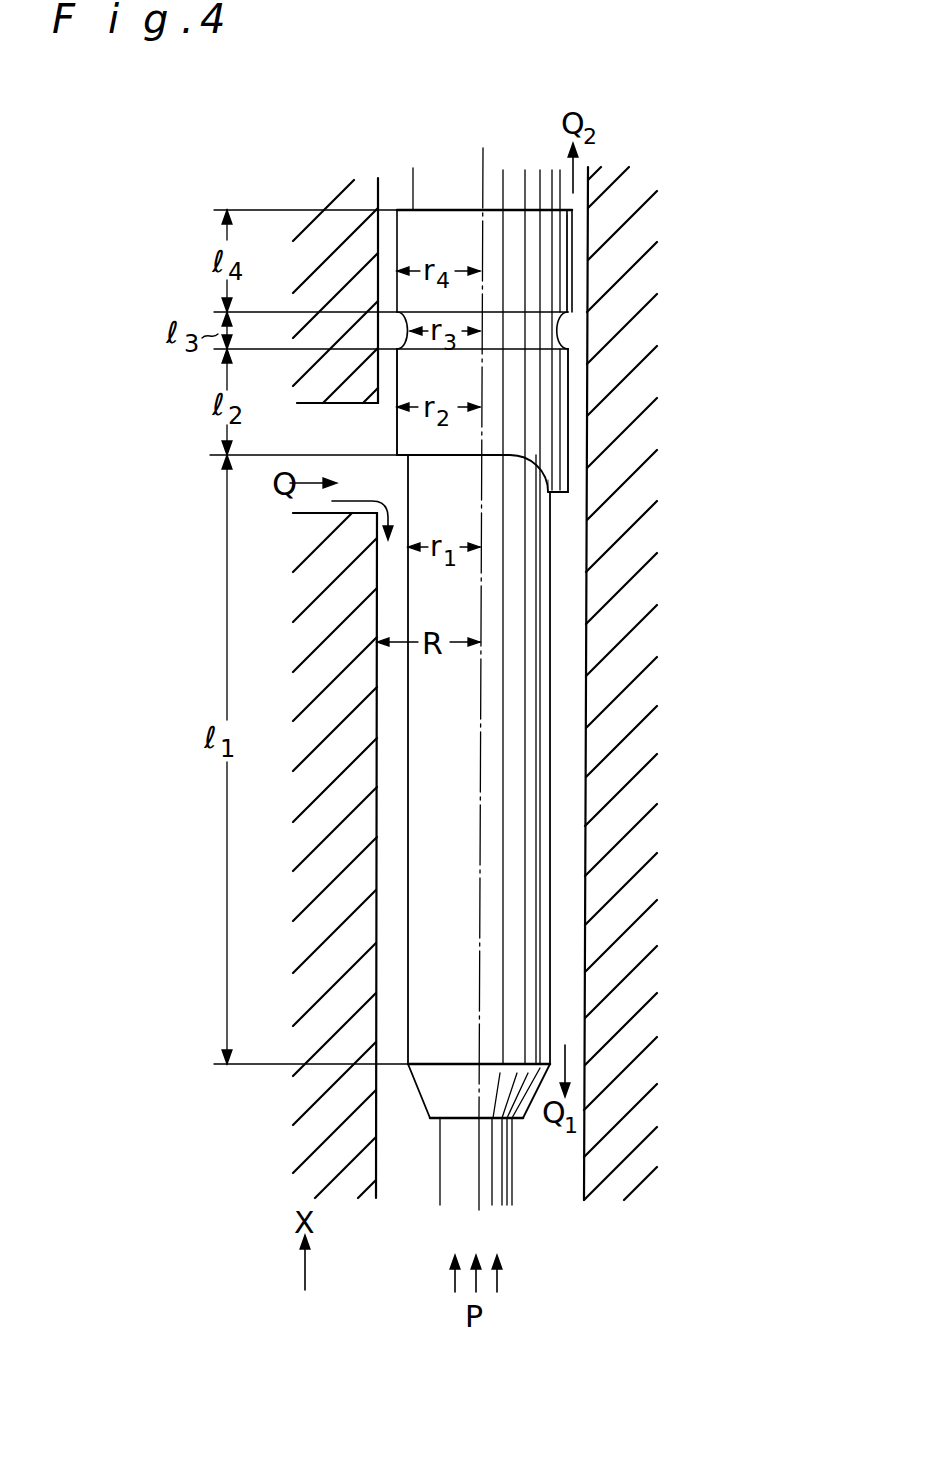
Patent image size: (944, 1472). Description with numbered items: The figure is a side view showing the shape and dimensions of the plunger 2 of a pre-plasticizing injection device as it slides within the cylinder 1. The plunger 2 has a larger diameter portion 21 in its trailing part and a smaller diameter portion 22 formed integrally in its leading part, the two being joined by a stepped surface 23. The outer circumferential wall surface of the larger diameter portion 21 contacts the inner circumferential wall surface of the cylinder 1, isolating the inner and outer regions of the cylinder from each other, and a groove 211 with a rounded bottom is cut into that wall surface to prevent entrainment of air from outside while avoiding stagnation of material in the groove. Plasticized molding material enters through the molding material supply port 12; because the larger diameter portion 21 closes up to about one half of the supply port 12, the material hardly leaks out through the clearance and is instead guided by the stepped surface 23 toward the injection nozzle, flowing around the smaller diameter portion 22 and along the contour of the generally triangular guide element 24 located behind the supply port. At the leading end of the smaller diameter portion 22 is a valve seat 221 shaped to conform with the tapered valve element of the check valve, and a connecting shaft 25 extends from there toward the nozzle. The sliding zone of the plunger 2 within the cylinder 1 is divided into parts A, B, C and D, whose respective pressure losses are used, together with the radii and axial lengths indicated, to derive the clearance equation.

The cylinder 1 is at (632, 607).
The plunger 2 is at (407, 890).
The molding material supply port 12 is at (340, 430).
The larger diameter portion 21 is at (533, 393).
The smaller diameter portion 22 is at (510, 973).
The stepped surface 23 is at (400, 458).
The guide element 24 is at (572, 476).
The connecting shaft 25 is at (490, 1182).
The groove 211 is at (540, 322).
The valve seat 221 is at (433, 1082).
The part A of sliding zone A is at (555, 793).
The part B of sliding zone B is at (572, 420).
The part C of sliding zone C is at (556, 331).
The part D of sliding zone D is at (574, 253).